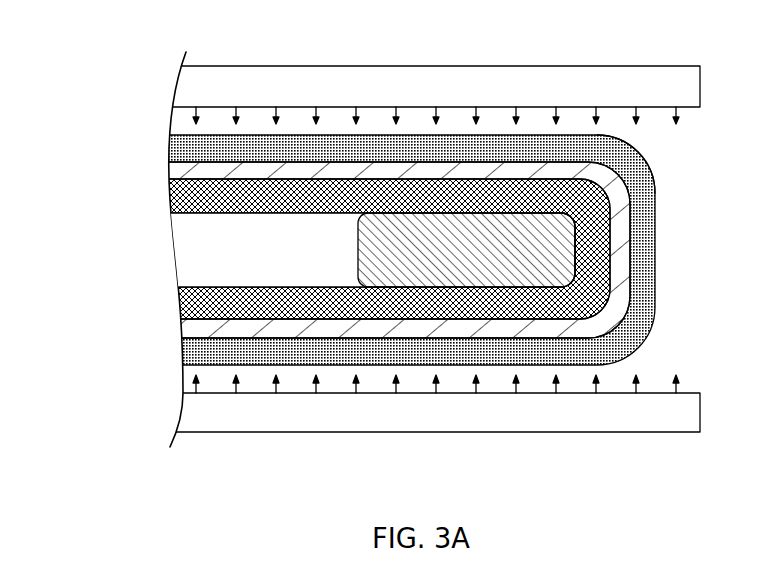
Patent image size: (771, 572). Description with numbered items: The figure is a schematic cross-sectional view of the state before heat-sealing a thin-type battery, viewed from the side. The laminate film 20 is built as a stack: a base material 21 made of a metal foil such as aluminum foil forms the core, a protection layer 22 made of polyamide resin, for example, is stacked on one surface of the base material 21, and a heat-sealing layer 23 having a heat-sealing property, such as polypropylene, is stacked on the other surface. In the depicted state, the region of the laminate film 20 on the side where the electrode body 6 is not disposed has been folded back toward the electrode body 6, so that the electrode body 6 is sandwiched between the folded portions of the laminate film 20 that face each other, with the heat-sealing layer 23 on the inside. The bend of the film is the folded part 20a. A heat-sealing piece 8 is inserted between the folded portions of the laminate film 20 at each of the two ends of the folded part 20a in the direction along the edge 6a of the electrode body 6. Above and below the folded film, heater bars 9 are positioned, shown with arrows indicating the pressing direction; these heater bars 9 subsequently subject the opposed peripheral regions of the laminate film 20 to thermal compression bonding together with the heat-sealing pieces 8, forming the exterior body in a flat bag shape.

The heater bar 9 is at (600, 78).
The laminate film 20 is at (338, 240).
The protection layer 22 is at (187, 150).
The base material 21 is at (181, 170).
The heat-sealing layer 23 is at (339, 249).
The electrode body 6 is at (192, 260).
The heat-sealing piece 8 is at (613, 237).
The edge of the electrode body 6a is at (612, 267).
The folded part 20a is at (680, 186).